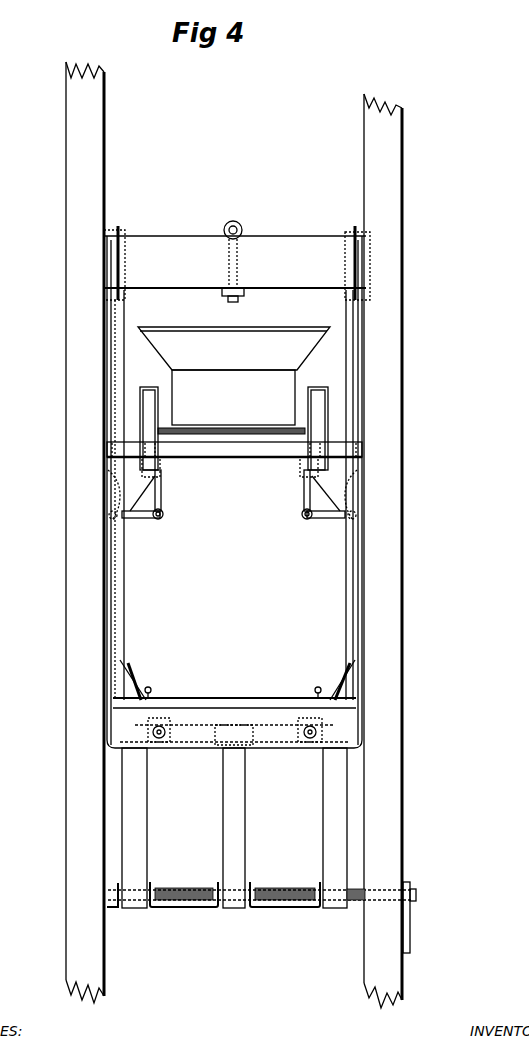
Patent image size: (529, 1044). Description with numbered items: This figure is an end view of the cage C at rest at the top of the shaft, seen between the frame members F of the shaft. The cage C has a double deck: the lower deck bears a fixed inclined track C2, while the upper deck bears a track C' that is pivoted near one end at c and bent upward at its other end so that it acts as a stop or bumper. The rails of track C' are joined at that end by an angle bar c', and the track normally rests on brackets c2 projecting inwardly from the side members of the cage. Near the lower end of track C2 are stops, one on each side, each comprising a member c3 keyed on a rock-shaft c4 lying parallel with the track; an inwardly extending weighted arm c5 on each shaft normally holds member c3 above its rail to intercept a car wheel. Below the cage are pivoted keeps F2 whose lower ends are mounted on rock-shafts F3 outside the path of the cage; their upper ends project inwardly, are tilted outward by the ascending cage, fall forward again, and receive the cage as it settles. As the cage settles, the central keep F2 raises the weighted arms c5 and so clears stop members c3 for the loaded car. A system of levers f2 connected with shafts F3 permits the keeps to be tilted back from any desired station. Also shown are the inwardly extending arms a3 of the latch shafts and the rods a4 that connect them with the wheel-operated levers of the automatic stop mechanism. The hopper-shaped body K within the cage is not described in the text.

The frame F is at (76, 206).
The cage C is at (237, 475).
The hopper K is at (234, 398).
The upper deck track C' is at (234, 470).
The angle bar c' is at (230, 472).
The brackets c2 is at (234, 493).
The inwardly extending arm a3 is at (333, 520).
The rod a4 is at (160, 490).
The stop member c3 is at (134, 672).
The fixed track C2 is at (155, 690).
The rock-shaft c4 is at (160, 740).
The pivot c is at (306, 745).
The weighted arm c5 is at (272, 736).
The pivoted keeps F2 is at (234, 828).
The rock-shafts F3 is at (178, 893).
The system of levers f2 is at (411, 926).